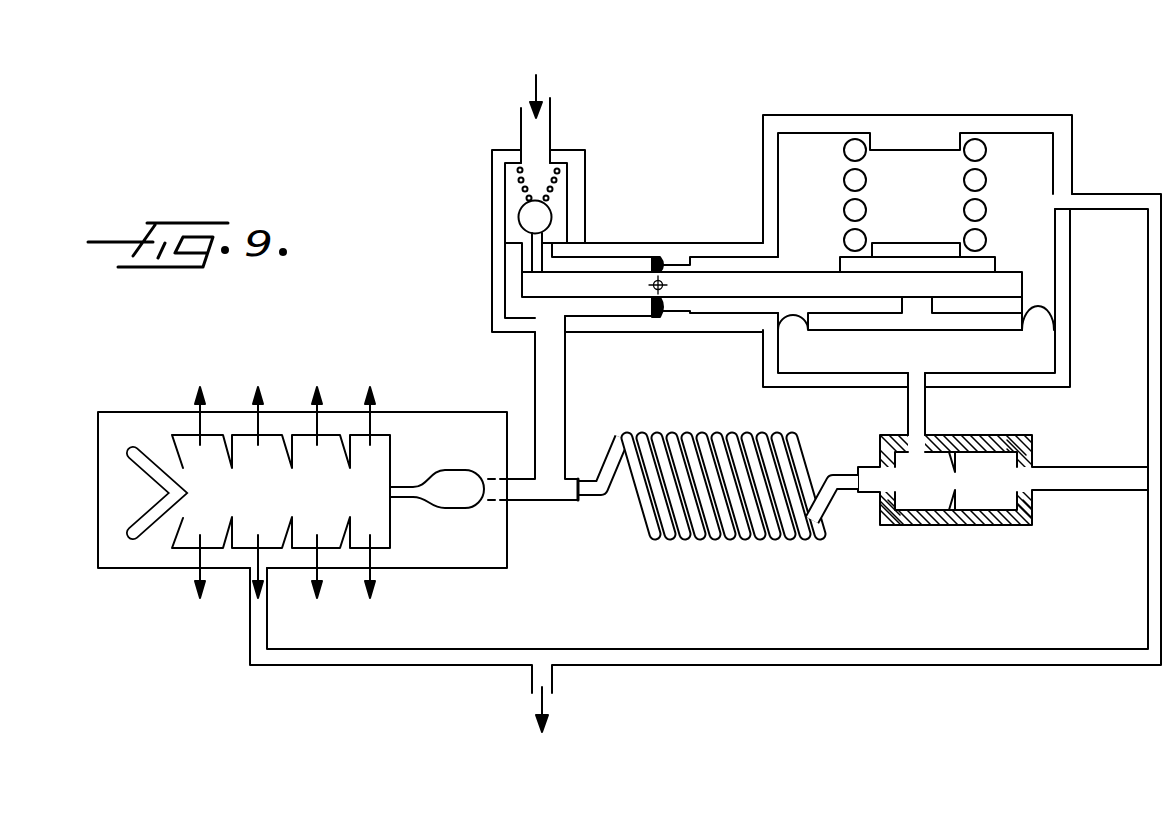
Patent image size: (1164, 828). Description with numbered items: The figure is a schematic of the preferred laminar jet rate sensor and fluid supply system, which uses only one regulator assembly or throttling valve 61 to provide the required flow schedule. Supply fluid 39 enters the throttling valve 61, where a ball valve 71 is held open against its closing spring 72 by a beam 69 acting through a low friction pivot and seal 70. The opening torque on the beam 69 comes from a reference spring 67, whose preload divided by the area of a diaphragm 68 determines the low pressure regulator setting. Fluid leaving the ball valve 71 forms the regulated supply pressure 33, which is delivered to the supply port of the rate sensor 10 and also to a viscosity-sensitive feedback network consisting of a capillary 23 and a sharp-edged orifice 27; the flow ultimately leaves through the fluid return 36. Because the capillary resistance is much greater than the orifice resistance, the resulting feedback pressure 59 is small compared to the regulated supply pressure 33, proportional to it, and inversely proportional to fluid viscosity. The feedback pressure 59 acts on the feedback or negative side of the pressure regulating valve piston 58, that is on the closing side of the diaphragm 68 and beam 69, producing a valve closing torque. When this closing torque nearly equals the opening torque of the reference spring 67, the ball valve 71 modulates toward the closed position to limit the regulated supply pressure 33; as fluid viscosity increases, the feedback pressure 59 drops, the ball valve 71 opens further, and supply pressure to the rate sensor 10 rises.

The rate sensor 10 is at (412, 394).
The capillary 23 is at (730, 552).
The sharp-edged orifice 27 is at (958, 498).
The regulated supply pressure 33 is at (545, 496).
The fluid return line 36 is at (705, 492).
The supply fluid 39 is at (525, 90).
The pressure regulating valve piston 58 is at (1085, 150).
The feedback pressure 59 is at (943, 387).
The throttling valve 61 is at (592, 208).
The reference spring 67 is at (843, 179).
The diaphragm 68 is at (1045, 310).
The beam 69 is at (765, 272).
The low friction pivot and seal 70 is at (654, 289).
The ball valve 71 is at (505, 228).
The closing spring 72 is at (508, 184).